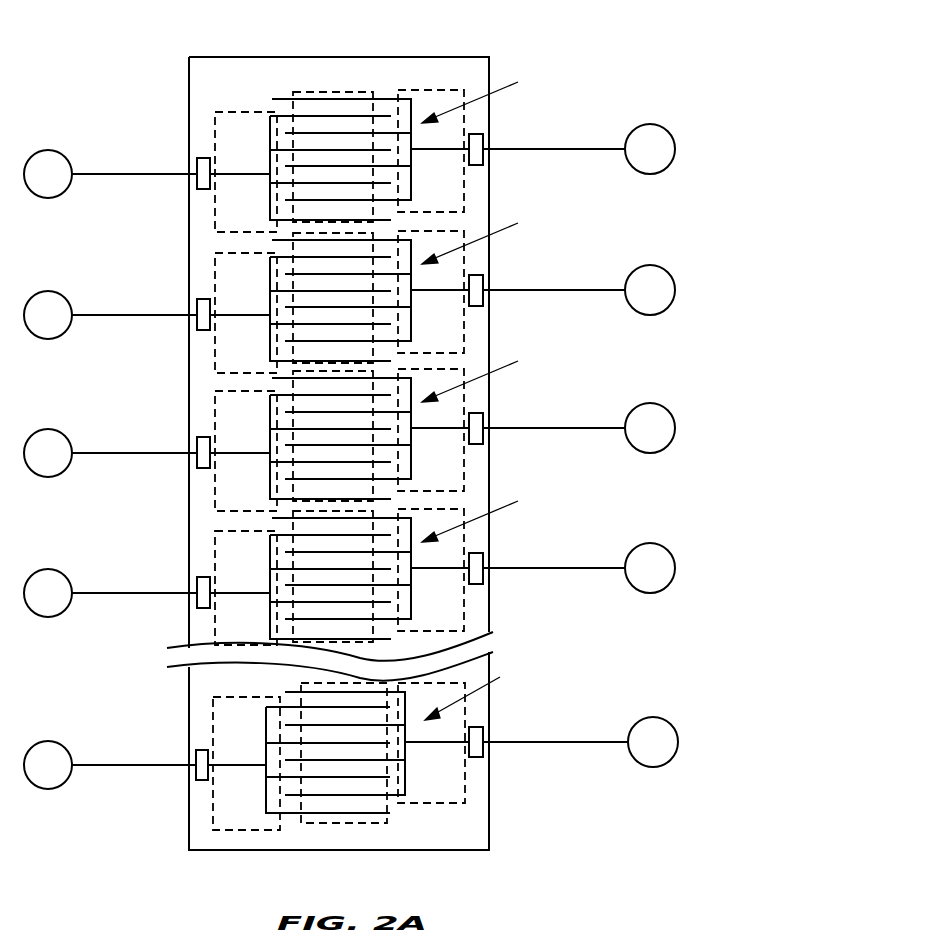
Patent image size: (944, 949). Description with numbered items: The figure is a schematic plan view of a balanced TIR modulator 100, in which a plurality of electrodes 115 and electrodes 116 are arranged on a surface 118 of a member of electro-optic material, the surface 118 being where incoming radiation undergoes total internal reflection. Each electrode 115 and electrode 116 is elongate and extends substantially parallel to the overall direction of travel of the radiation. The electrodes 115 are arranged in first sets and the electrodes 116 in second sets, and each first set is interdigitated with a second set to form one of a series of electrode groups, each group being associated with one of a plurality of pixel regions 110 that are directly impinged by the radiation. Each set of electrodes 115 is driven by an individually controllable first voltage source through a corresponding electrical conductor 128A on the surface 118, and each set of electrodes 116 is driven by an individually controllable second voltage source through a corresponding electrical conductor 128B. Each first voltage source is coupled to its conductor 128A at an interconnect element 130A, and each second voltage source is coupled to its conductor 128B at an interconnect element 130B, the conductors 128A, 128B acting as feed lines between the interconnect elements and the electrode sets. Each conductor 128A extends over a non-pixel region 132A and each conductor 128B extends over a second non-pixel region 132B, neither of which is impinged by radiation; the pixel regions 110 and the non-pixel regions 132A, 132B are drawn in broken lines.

The TIR modulator 100 is at (472, 38).
The pixel region 110 is at (340, 92).
The electrode 115 is at (292, 147).
The electrode 116 is at (390, 132).
The surface 118 is at (462, 838).
The electrical conductor 128A is at (225, 174).
The electrical conductor 128B is at (446, 149).
The interconnect element 130A is at (194, 178).
The interconnect element 130B is at (484, 160).
The non-pixel region 132A is at (212, 207).
The second non-pixel region 132B is at (466, 177).